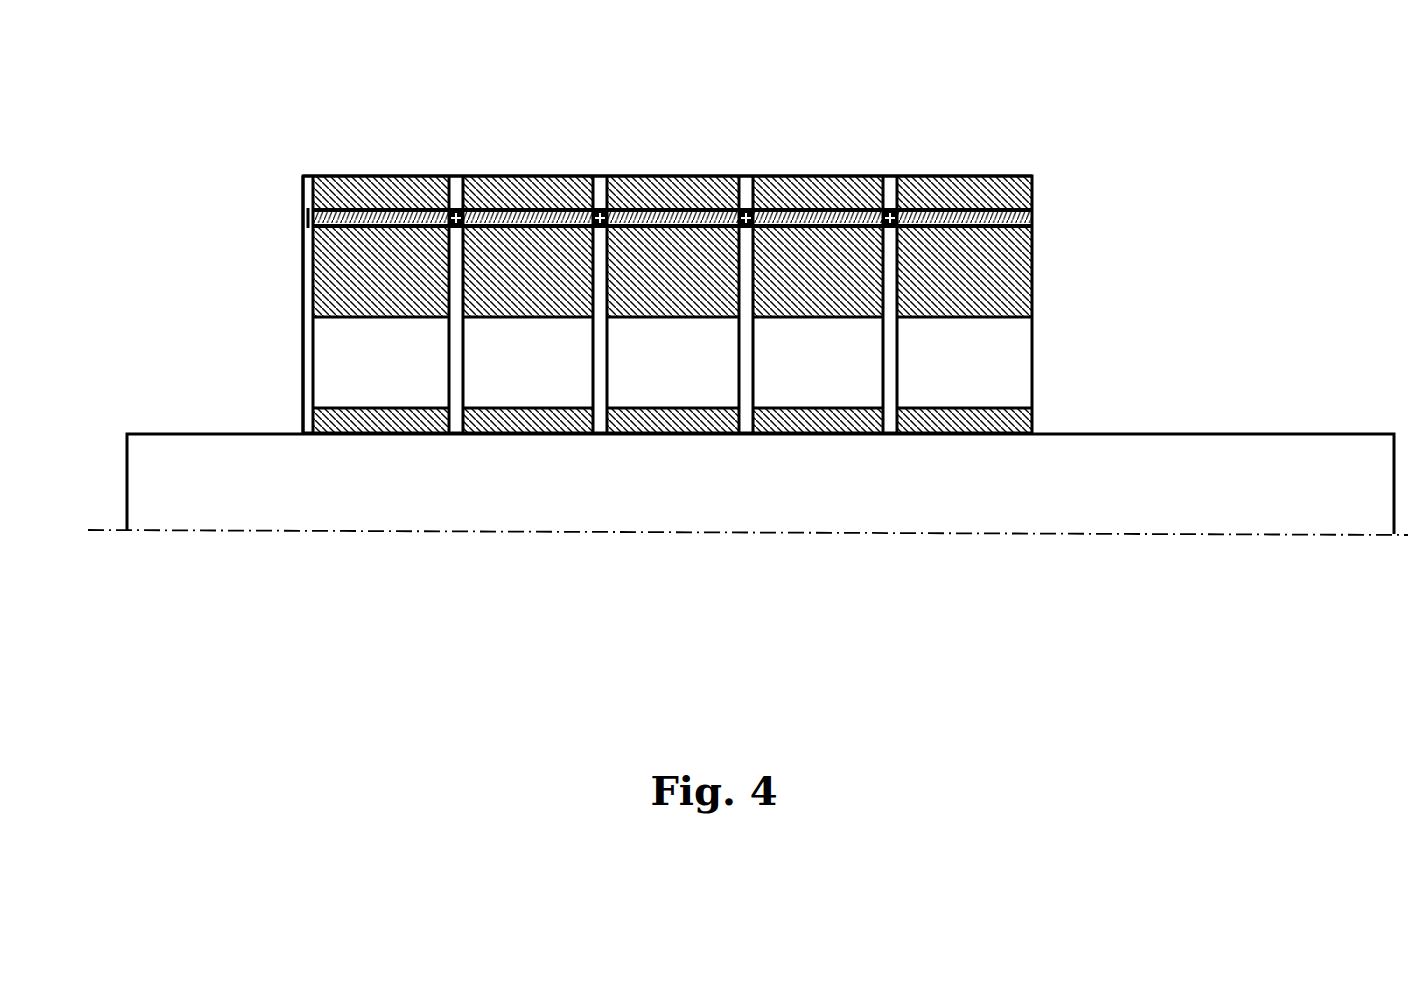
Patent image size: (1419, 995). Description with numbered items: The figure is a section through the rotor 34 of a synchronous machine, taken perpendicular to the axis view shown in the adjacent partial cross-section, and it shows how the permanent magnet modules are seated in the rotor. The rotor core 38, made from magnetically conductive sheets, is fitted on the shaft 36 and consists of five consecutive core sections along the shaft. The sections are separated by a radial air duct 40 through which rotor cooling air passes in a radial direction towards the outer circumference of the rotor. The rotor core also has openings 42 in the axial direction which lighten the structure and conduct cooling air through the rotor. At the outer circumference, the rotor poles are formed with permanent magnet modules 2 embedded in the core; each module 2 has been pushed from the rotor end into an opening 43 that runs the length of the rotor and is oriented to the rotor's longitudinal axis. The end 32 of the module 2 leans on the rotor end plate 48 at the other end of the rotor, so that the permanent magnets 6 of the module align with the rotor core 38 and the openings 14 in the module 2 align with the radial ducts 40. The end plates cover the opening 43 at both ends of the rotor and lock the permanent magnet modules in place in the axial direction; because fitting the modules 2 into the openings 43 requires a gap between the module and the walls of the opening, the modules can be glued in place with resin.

The permanent magnet module 2 is at (392, 203).
The permanent magnets 6 is at (334, 177).
The openings in the module 14 is at (473, 192).
The end of the module 32 is at (302, 182).
The rotor 34 is at (690, 122).
The shaft 36 is at (444, 492).
The rotor core 38 is at (982, 280).
The radial air duct 40 is at (462, 192).
The openings in the rotor core 42 is at (378, 362).
The openings for permanent magnet modules 43 is at (1004, 212).
The rotor end plate 48 is at (304, 230).